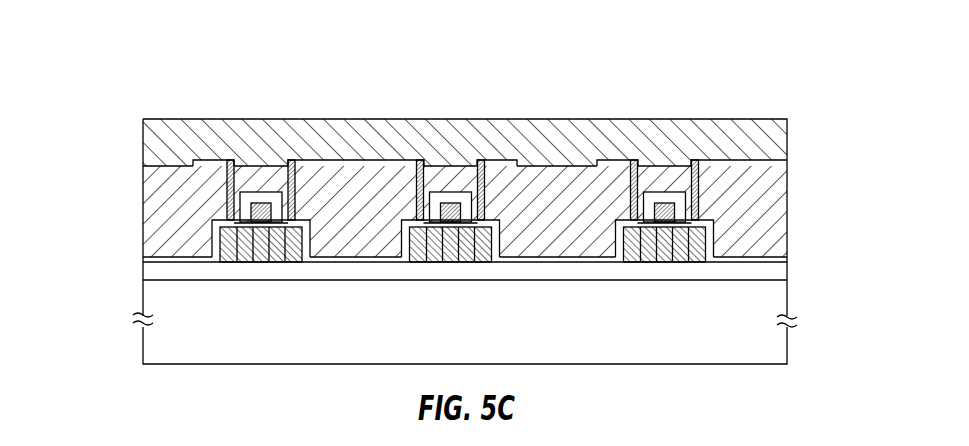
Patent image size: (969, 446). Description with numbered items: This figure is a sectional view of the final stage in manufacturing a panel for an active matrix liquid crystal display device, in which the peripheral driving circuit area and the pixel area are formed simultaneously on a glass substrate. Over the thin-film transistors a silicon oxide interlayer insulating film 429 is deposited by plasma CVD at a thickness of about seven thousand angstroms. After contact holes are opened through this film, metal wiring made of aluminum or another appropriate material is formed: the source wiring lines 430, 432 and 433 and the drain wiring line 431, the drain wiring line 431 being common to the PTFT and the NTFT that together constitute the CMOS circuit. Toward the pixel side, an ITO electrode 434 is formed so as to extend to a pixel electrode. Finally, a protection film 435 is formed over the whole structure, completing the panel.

The interlayer insulating film 429 is at (426, 198).
The source wiring line 430 is at (188, 119).
The drain wiring line 431 is at (354, 119).
The source wiring line 432 is at (469, 119).
The source wiring line 433 is at (643, 119).
The ITO electrode 434 is at (748, 119).
The protection film 435 is at (509, 135).